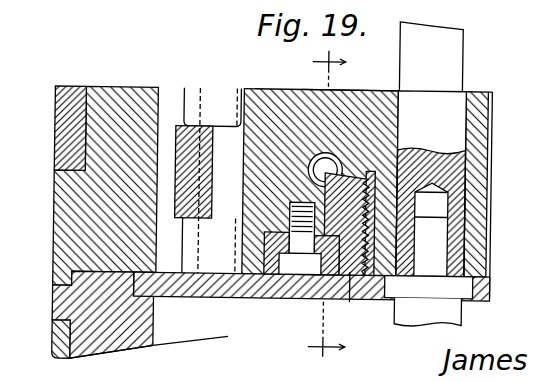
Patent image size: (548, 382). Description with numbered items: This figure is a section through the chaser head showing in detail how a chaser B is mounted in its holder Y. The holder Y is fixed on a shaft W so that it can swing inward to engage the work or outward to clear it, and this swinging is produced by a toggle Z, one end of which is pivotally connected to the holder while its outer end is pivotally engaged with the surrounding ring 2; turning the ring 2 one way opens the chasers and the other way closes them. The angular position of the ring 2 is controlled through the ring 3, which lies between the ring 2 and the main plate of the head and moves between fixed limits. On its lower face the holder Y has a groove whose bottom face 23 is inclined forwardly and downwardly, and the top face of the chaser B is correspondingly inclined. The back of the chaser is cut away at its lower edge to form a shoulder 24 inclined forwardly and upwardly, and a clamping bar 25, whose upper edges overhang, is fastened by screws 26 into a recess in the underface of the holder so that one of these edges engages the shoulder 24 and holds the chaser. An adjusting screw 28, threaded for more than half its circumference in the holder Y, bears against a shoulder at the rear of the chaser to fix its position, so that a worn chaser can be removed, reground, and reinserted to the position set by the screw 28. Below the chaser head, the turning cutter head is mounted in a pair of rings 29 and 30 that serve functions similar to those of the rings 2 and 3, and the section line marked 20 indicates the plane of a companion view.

The surrounding ring 2 is at (60, 213).
The ring 3 is at (62, 132).
The section line 20- 20 is at (318, 214).
The inclined bottom face 23 is at (363, 172).
The shoulder 24 is at (330, 233).
The clamping bar 25 is at (273, 277).
The screws 26 is at (316, 270).
The adjusting screw 28 is at (338, 166).
The ring 29 is at (65, 301).
The ring 30 is at (62, 338).
The chaser B is at (351, 301).
The shaft W is at (453, 72).
The holder Y is at (351, 99).
The toggle Z is at (199, 221).